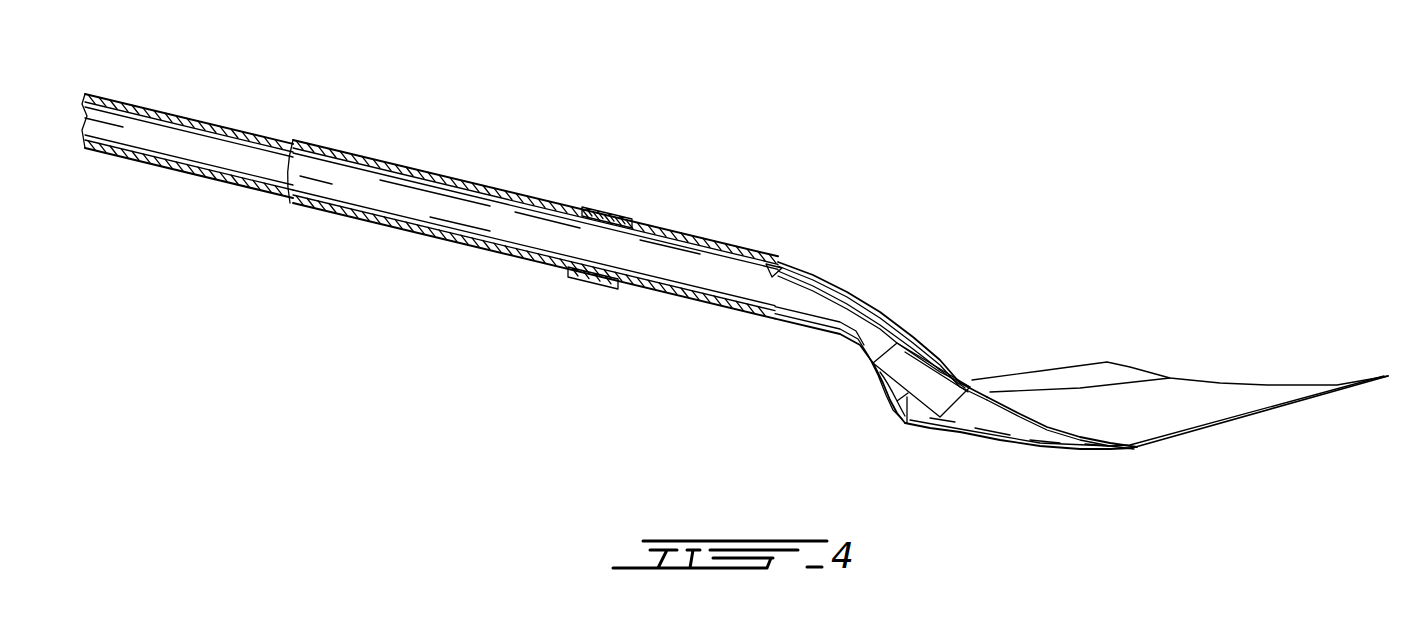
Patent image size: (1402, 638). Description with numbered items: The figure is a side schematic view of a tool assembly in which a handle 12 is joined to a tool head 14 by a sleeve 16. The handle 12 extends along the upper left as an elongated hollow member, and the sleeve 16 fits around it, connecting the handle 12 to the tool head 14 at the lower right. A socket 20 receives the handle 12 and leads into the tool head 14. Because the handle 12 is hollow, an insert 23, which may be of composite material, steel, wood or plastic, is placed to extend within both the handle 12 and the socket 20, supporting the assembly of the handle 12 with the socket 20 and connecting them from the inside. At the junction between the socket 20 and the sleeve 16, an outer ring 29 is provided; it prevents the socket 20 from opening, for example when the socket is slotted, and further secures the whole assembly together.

The handle 12 is at (176, 152).
The sleeve 16 is at (419, 242).
The socket 20 is at (763, 250).
The insert 23 is at (855, 309).
The tool head 14 is at (1088, 392).
The outer ring 29 is at (595, 289).